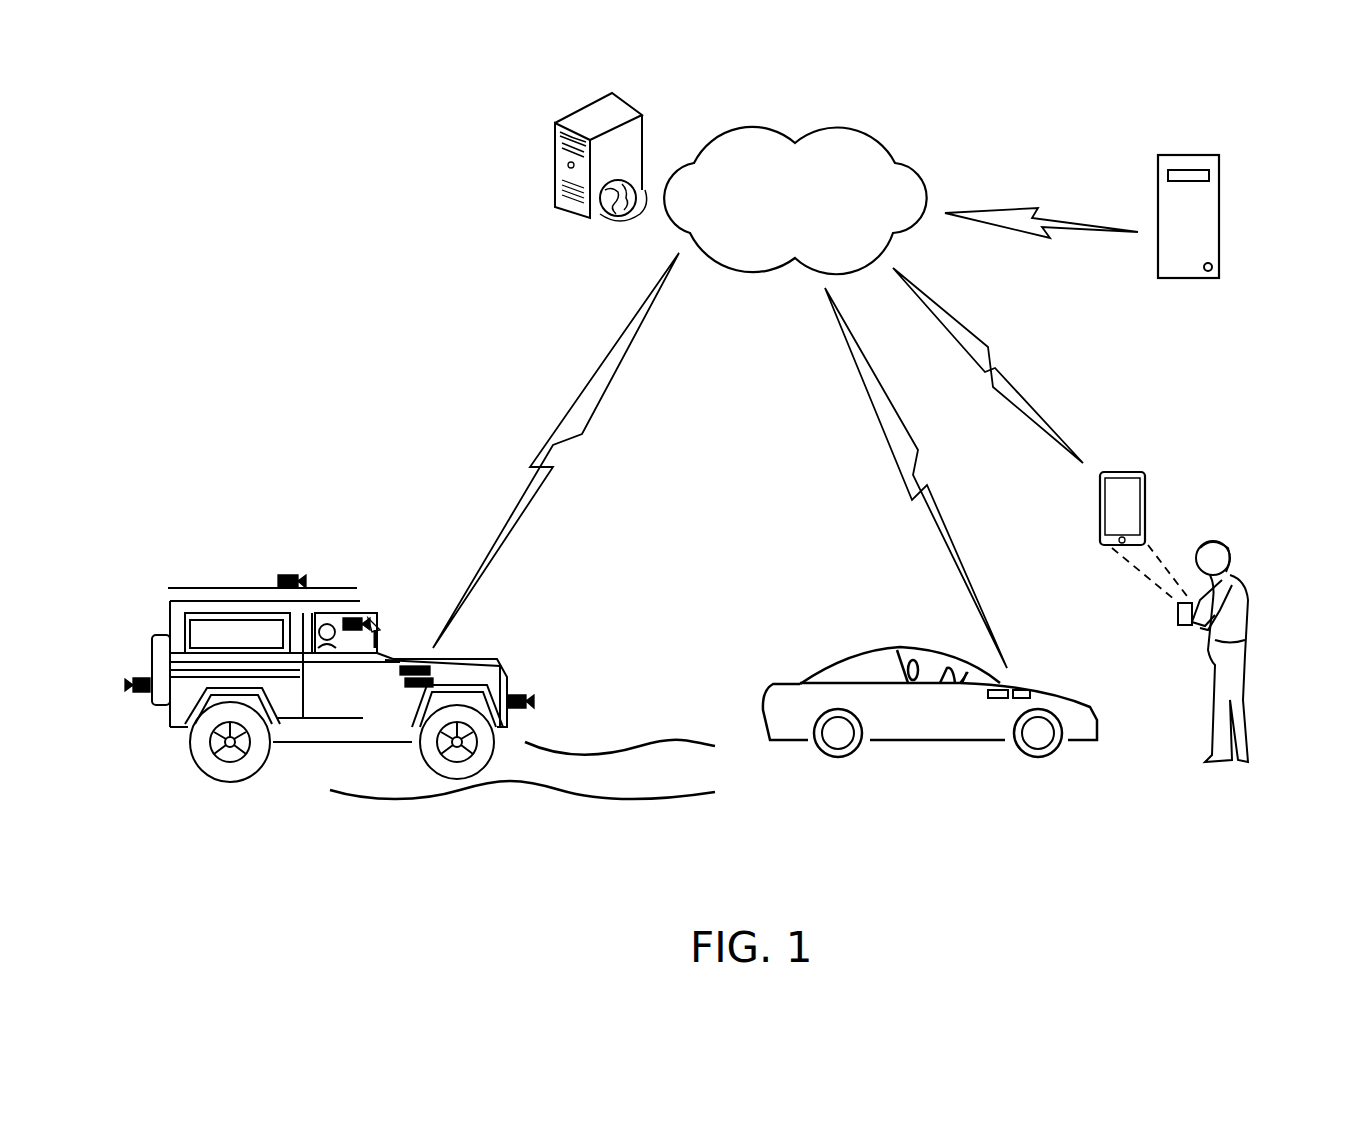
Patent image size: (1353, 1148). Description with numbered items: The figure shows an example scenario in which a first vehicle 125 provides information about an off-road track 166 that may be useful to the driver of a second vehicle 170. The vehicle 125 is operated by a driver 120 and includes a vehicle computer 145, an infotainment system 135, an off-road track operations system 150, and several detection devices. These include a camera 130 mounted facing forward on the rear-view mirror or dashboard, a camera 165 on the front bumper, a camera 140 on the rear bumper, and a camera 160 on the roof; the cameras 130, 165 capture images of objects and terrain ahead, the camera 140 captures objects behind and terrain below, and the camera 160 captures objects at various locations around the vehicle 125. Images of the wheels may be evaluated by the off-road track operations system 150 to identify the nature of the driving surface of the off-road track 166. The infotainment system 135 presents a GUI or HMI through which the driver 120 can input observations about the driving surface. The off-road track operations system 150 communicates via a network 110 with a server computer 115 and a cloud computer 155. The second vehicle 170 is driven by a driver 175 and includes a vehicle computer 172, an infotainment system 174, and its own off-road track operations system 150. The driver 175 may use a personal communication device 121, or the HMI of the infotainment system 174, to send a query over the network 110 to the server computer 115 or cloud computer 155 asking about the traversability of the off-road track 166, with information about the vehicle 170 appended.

The network 110 is at (795, 200).
The server computer 115 is at (1222, 220).
The driver 120 is at (329, 615).
The personal communication device 121 is at (1146, 512).
The vehicle 125 is at (193, 555).
The camera 130 is at (357, 612).
The infotainment system 135 is at (378, 628).
The camera 140 is at (131, 706).
The vehicle computer 145 is at (397, 673).
The off-road track operations system 150 is at (415, 693).
The cloud computer 155 is at (556, 94).
The camera 160 is at (278, 572).
The camera 165 is at (538, 705).
The off-road track 166 is at (522, 770).
The vehicle 170 is at (905, 757).
The vehicle computer 172 is at (990, 694).
The infotainment system 174 is at (968, 672).
The driver 175 is at (902, 648).